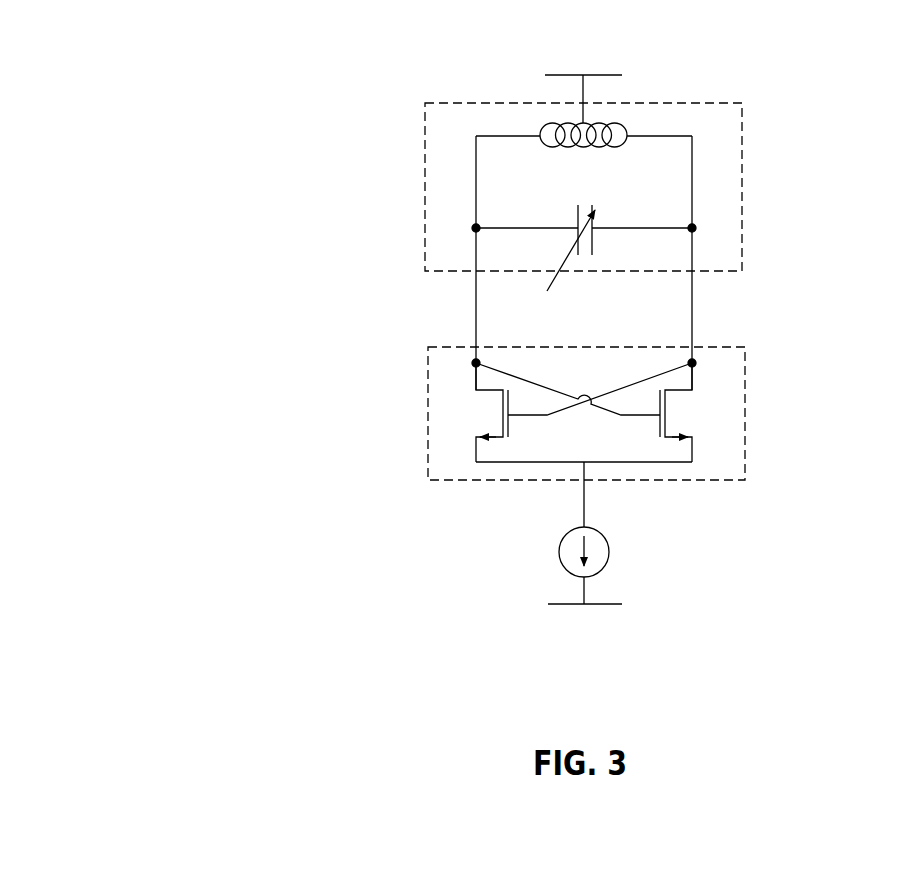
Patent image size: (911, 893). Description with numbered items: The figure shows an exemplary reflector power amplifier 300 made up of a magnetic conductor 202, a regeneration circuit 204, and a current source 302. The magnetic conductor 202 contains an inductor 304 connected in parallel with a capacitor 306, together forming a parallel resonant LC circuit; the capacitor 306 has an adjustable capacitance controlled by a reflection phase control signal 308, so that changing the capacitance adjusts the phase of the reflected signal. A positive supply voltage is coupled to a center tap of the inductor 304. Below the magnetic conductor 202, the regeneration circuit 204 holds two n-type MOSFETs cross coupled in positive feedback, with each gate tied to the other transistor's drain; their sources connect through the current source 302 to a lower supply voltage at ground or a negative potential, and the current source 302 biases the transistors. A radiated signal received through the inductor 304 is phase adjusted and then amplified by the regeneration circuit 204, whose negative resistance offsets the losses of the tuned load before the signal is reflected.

The reflector power amplifier 300 is at (276, 613).
The magnetic conductor 202 is at (428, 187).
The regeneration circuit 204 is at (430, 415).
The current source 302 is at (559, 553).
The inductor 304 is at (610, 157).
The capacitor 306 is at (610, 245).
The reflection phase control signal 308 is at (547, 291).